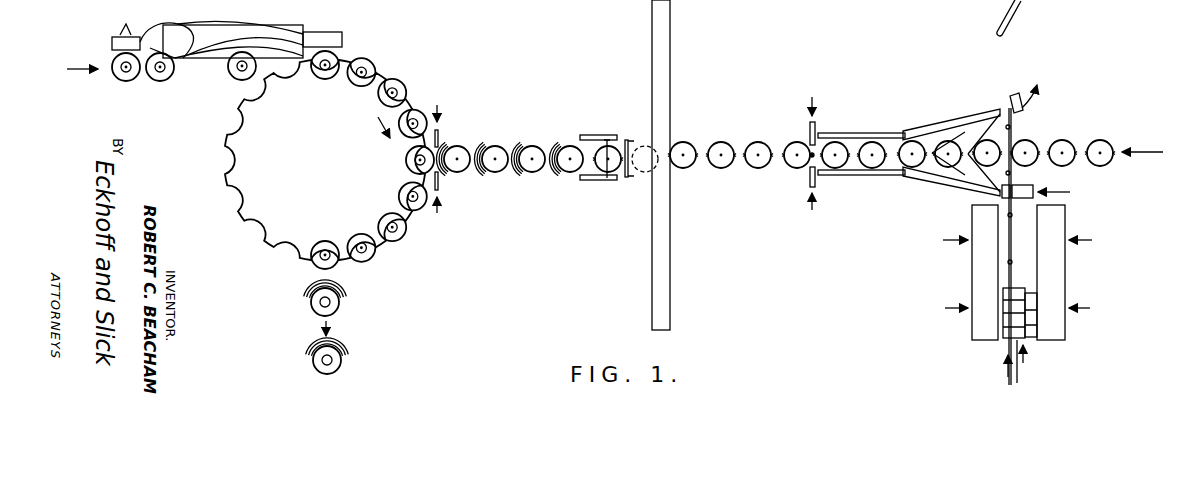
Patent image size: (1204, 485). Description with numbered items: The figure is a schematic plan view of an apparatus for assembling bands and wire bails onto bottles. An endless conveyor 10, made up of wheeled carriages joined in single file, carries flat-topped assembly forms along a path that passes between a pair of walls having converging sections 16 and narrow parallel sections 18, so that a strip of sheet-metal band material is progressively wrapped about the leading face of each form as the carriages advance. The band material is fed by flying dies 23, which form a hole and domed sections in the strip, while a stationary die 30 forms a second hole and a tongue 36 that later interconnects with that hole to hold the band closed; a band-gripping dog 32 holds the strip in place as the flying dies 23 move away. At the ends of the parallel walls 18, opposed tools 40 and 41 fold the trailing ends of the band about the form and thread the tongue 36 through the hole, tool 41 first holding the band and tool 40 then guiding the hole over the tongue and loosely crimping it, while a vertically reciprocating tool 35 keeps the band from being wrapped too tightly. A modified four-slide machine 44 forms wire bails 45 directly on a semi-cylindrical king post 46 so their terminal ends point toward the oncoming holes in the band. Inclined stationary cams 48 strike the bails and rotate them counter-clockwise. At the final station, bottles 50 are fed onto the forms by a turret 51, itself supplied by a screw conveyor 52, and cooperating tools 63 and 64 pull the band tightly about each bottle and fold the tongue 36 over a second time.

The endless conveyor 10 is at (720, 170).
The converging wall sections 16 is at (960, 121).
The parallel wall sections 18 is at (880, 133).
The flying dies 23 is at (1069, 272).
The stationary die 30 is at (1036, 186).
The band-gripping dog 32 is at (1024, 112).
The tool 35 is at (808, 157).
The tongue 36 is at (1012, 17).
The tool 40 is at (808, 127).
The tool 41 is at (808, 184).
The four-slide machine 44 is at (674, 63).
The wire bail 45 is at (626, 178).
The king post 46 is at (636, 145).
The inclined stationary cams 48 is at (588, 135).
The bottle 50 is at (232, 74).
The turret 51 is at (331, 155).
The screw conveyor 52 is at (210, 30).
The tool 63 is at (440, 136).
The tool 64 is at (440, 180).